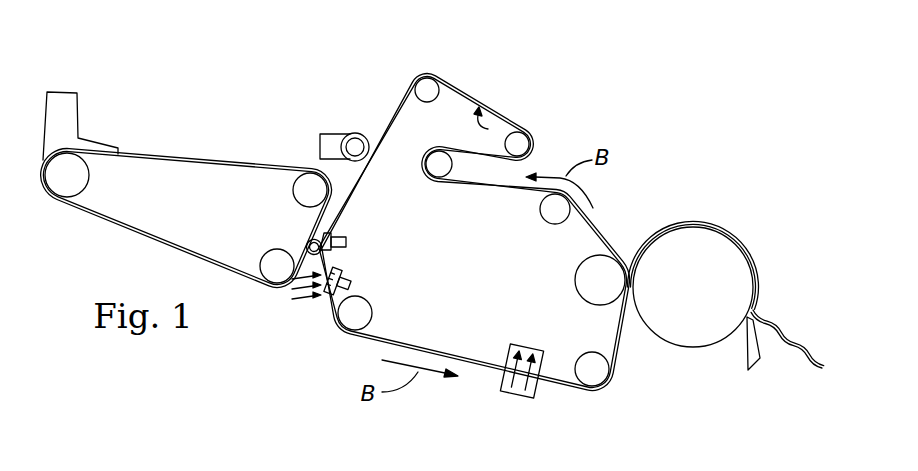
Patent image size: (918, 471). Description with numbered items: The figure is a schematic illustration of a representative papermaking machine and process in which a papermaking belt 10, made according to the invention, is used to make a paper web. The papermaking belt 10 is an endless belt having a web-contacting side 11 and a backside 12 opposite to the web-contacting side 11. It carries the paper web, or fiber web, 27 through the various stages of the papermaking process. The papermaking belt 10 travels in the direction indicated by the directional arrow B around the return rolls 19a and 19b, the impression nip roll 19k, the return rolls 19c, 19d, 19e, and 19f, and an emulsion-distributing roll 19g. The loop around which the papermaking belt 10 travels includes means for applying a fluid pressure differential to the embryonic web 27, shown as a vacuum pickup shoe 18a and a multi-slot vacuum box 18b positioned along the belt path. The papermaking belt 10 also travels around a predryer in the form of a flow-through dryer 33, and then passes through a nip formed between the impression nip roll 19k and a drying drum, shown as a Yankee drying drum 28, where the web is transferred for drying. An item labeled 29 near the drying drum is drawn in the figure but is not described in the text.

The papermaking belt 10 is at (612, 253).
The web-contacting side 11 is at (478, 66).
The backside 12 is at (488, 129).
The vacuum pickup shoe 18a is at (337, 235).
The multi-slot vacuum box 18b is at (350, 277).
The return roll 19a is at (358, 312).
The return roll 19b is at (594, 372).
The return roll 19c is at (555, 212).
The return roll 19d is at (440, 165).
The return roll 19e is at (520, 143).
The return roll 19f is at (427, 88).
The emulsion-distributing roll 19g is at (330, 142).
The impression nip roll 19k is at (597, 282).
The paper web 27 is at (158, 152).
The Yankee drying drum 28 is at (710, 318).
The web / sheet 29 is at (742, 232).
The flow-through dryer 33 is at (515, 398).